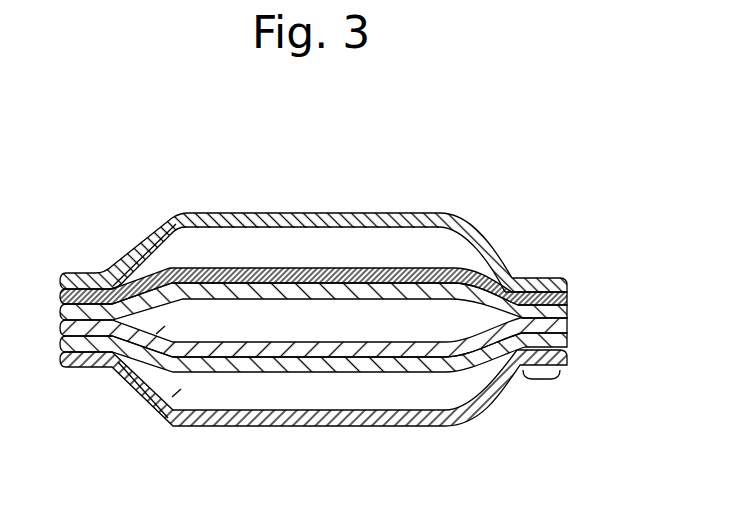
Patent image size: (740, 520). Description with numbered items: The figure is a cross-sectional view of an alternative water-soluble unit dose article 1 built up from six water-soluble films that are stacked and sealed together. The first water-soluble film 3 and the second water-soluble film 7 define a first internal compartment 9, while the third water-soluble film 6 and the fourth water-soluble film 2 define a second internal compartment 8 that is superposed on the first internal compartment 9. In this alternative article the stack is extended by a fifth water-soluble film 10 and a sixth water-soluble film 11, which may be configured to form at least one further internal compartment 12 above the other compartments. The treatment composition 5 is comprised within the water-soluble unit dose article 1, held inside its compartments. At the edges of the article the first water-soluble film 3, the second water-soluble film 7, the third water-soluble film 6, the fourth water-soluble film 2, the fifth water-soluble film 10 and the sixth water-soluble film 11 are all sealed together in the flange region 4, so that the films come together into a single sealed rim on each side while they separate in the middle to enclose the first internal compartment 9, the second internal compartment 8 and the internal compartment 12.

The water-soluble unit dose article 1 is at (603, 161).
The fourth water-soluble film 2 is at (568, 307).
The first water-soluble film 3 is at (473, 413).
The flange region 4 is at (545, 381).
The treatment composition 5 is at (177, 393).
The third water-soluble film 6 is at (568, 325).
The second water-soluble film 7 is at (568, 343).
The second internal compartment 8 is at (160, 331).
The first internal compartment 9 is at (394, 380).
The fifth water-soluble film 10 is at (568, 291).
The sixth water-soluble film 11 is at (537, 278).
The internal compartment 12 is at (390, 247).